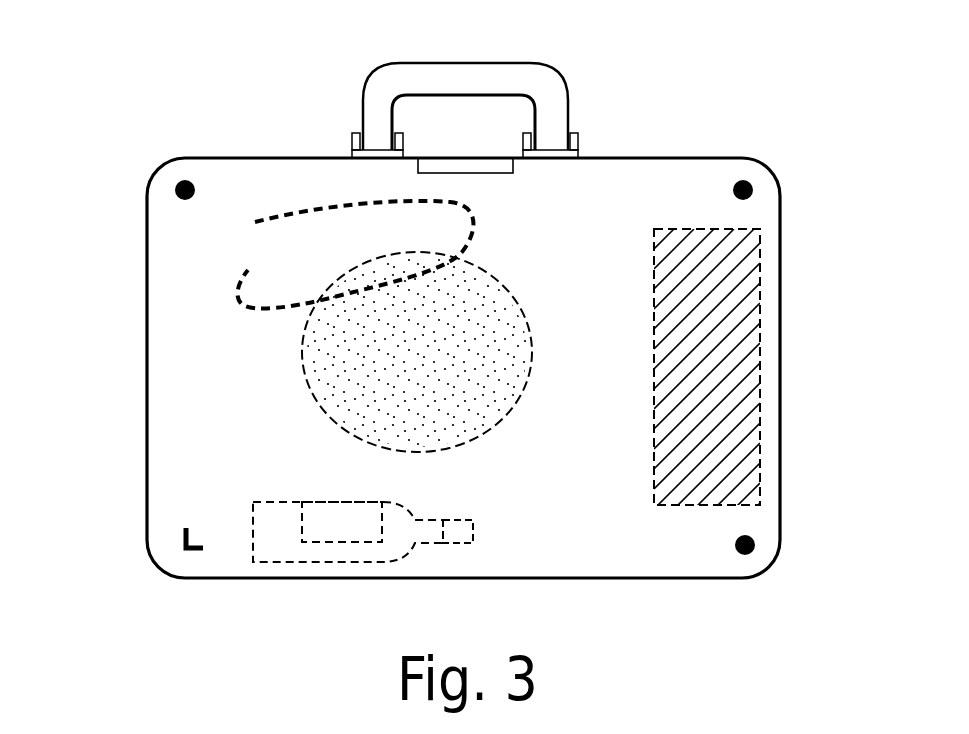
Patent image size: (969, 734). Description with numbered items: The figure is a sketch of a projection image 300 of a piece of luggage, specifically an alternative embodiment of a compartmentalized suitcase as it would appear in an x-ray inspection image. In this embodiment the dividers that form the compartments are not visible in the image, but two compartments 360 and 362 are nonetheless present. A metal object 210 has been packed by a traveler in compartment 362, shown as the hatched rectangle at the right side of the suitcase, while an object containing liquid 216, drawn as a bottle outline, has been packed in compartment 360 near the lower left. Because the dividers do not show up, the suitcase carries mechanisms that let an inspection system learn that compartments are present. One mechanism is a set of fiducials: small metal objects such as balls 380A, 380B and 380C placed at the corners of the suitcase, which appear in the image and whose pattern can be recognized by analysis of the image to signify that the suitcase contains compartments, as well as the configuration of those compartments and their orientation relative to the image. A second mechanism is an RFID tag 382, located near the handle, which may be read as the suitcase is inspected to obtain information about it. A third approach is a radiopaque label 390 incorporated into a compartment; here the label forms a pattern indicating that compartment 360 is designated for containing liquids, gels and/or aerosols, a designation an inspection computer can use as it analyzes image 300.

The image 300 is at (783, 493).
The metal object 210 is at (768, 372).
The object containing liquid 216 is at (320, 563).
The compartment 360 is at (181, 500).
The compartment 362 is at (752, 217).
The ball 380A is at (183, 181).
The ball 380B is at (745, 182).
The ball 380C is at (748, 556).
The RFID tag 382 is at (463, 170).
The radiopaque label 390 is at (183, 540).